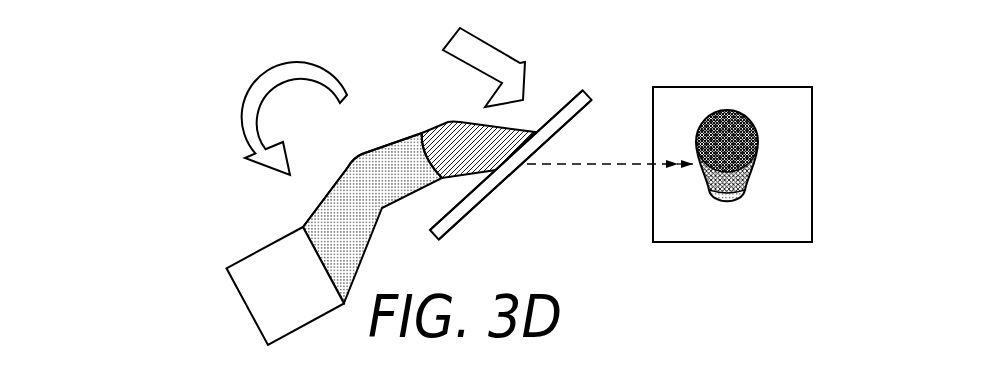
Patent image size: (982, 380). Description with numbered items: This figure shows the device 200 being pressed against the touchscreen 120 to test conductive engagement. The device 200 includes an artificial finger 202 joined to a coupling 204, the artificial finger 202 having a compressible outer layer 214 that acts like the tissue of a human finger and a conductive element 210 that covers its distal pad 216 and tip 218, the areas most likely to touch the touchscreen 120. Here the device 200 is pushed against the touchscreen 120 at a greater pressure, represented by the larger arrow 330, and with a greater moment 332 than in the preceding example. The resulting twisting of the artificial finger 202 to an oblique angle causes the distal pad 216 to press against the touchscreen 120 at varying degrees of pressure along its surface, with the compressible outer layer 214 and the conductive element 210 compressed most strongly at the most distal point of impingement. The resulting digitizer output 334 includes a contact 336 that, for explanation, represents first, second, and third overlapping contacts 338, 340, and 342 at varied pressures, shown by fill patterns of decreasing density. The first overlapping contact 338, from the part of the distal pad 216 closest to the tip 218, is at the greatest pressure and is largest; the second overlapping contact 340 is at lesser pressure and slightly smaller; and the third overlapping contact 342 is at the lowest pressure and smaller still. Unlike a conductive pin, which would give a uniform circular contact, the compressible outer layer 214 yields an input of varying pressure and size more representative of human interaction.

The device 200 is at (198, 175).
The artificial finger 202 is at (312, 212).
The coupling 204 is at (233, 265).
The conductive element 210 is at (477, 124).
The compressible outer layer 214 is at (366, 253).
The distal pad 216 is at (503, 182).
The tip 218 is at (540, 128).
The touchscreen 120 is at (467, 218).
The larger arrow 330 is at (475, 37).
The moment 332 is at (316, 76).
The digitizer output 334 is at (776, 86).
The contact 336 is at (769, 168).
The first overlapping contact 338 is at (754, 162).
The second overlapping contact 340 is at (749, 182).
The third overlapping contact 342 is at (736, 201).